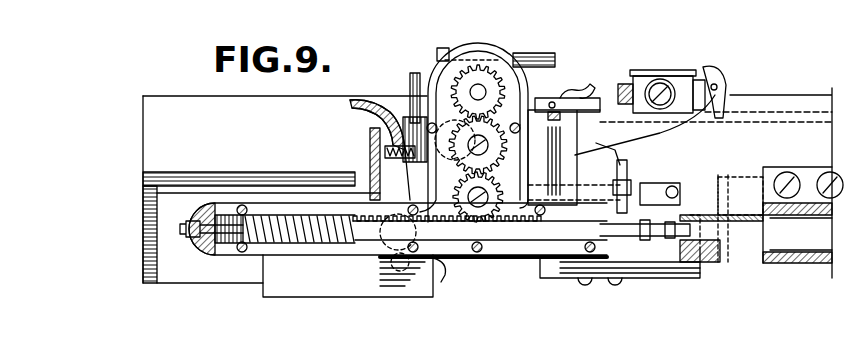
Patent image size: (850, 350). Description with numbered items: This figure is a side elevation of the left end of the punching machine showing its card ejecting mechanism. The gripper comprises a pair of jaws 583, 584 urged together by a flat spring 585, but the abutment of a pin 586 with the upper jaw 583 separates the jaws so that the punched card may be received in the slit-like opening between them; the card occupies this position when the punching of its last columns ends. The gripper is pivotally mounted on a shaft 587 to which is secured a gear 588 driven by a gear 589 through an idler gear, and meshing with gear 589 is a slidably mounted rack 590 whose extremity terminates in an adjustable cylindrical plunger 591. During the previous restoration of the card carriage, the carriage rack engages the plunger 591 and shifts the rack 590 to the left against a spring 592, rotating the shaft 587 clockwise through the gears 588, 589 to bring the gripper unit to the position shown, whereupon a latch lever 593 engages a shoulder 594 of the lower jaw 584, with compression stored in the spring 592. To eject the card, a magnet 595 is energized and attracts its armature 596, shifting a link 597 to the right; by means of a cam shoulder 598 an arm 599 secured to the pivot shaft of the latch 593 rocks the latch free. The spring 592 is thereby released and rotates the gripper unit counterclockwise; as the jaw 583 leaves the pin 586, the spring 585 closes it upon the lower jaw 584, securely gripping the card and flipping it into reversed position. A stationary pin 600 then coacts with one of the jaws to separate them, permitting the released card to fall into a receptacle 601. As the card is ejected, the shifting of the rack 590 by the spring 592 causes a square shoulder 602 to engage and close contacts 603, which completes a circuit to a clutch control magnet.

The upper jaw 583 is at (596, 93).
The lower jaw 584 is at (618, 120).
The flat spring 585 is at (598, 78).
The pin 586 is at (562, 116).
The shaft 587 is at (481, 90).
The gear 588 is at (500, 88).
The gear 589 is at (490, 208).
The rack 590 is at (443, 233).
The cylindrical plunger 591 is at (736, 212).
The spring 592 is at (313, 240).
The latch lever 593 is at (409, 104).
The shoulder 594 is at (437, 63).
The magnet 595 is at (748, 180).
The armature 596 is at (690, 190).
The link 597 is at (622, 178).
The cam shoulder 598 is at (370, 146).
The arm 599 is at (510, 174).
The stationary pin 600 is at (414, 78).
The receptacle 601 is at (285, 189).
The square shoulder 602 is at (597, 230).
The contacts 603 is at (692, 266).